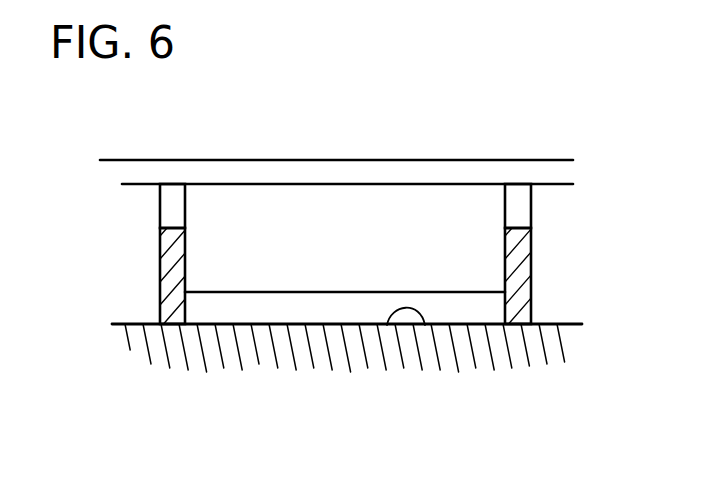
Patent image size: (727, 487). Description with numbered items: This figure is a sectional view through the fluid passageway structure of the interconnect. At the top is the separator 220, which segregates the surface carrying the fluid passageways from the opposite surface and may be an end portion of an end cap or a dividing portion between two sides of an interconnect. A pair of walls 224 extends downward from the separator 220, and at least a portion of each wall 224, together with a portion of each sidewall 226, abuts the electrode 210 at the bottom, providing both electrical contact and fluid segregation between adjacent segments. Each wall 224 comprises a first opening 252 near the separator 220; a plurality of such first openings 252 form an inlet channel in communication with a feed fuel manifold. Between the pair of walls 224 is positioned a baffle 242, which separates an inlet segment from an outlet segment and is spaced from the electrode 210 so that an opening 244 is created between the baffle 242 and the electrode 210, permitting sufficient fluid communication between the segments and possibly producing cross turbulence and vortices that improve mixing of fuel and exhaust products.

The separator 220 is at (449, 175).
The first opening 252 is at (170, 208).
The wall 224 is at (170, 273).
The baffle 242 is at (338, 256).
The sidewall 226 is at (282, 313).
The opening 244 is at (387, 325).
The electrode 210 is at (137, 324).